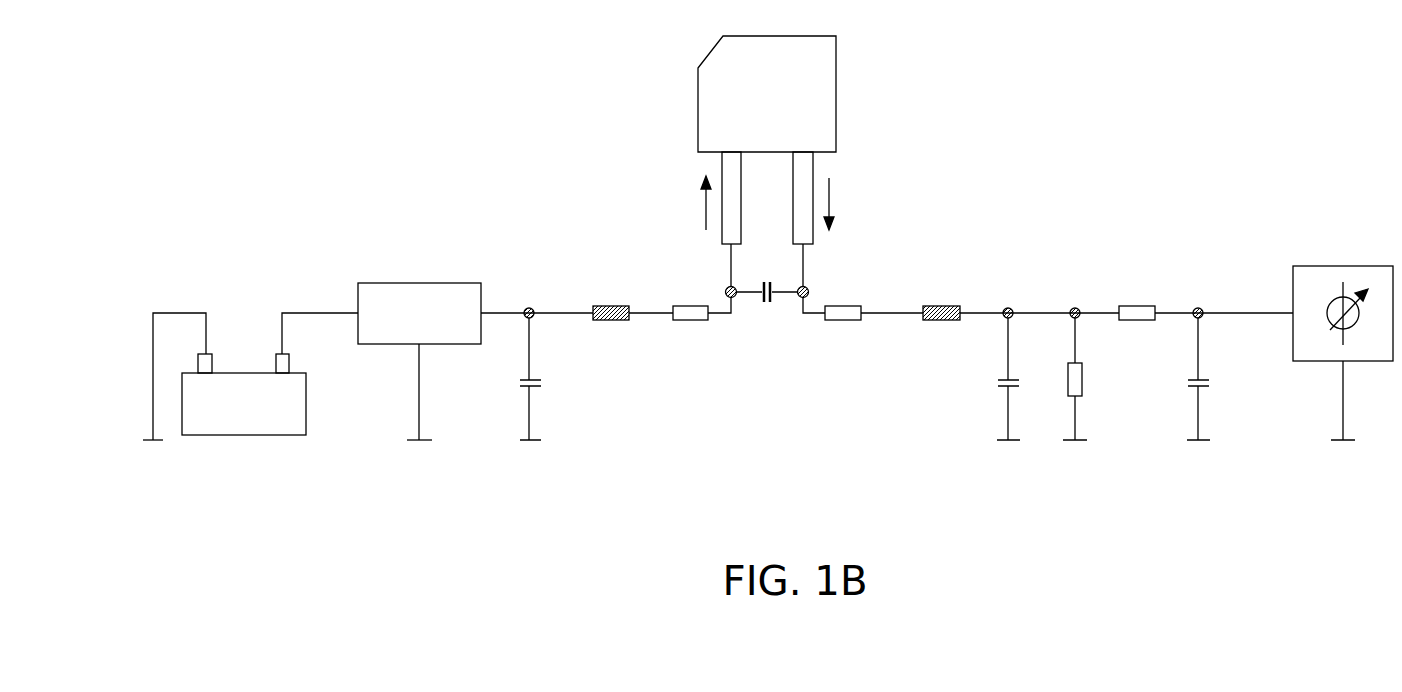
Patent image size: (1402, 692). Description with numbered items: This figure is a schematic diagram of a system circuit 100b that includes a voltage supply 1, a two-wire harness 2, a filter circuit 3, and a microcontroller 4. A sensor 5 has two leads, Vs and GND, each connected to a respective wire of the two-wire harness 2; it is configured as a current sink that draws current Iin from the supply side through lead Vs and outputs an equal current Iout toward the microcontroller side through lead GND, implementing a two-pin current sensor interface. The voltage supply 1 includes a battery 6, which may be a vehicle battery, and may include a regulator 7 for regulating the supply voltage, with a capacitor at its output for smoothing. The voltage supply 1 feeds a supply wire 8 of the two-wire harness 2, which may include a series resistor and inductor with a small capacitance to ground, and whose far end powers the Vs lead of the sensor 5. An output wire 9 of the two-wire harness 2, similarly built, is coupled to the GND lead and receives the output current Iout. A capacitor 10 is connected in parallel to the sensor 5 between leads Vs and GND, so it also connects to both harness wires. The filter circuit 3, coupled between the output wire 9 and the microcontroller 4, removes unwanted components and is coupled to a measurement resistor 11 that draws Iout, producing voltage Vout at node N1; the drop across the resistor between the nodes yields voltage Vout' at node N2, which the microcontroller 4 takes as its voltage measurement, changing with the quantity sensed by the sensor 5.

The system circuit 100b is at (274, 57).
The voltage supply 1 is at (145, 473).
The two-wire harness 2 is at (978, 473).
The filter circuit 3 is at (1247, 473).
The microcontroller 4 is at (1343, 266).
The sensor 5 is at (836, 95).
The battery 6 is at (244, 373).
The regulator 7 is at (419, 283).
The supply wire 8 is at (732, 326).
The output wire 9 is at (983, 326).
The capacitor 10 is at (782, 300).
The measurement resistor 11 is at (1083, 398).
The node N1 is at (1080, 317).
The node N2 is at (1203, 317).